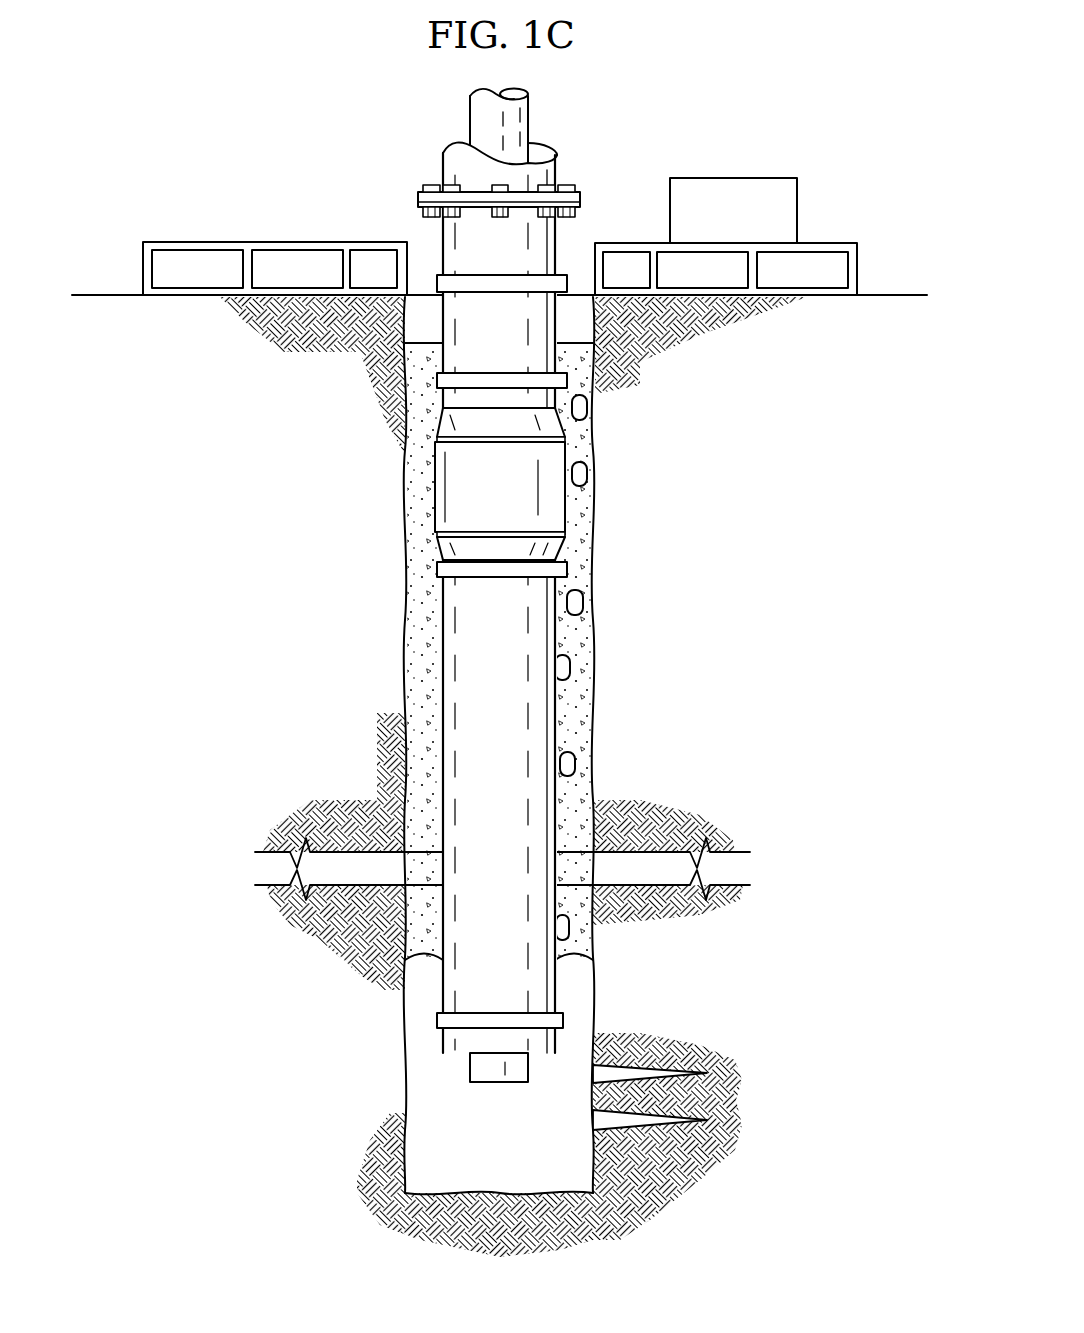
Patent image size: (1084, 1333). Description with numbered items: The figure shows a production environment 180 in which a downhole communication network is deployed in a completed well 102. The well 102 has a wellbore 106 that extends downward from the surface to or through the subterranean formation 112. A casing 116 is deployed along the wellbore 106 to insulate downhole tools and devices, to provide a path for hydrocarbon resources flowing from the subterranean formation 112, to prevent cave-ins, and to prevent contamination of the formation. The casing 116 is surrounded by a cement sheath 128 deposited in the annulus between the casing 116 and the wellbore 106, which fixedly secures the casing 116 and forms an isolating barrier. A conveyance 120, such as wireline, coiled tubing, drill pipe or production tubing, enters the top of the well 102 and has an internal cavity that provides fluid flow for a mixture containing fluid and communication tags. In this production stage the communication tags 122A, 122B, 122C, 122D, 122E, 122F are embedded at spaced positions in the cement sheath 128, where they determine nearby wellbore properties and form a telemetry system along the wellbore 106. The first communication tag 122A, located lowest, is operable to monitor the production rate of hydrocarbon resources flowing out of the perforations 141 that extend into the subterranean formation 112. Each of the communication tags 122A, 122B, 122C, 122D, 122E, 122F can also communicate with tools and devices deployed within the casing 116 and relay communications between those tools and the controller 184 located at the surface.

The production environment 180 is at (263, 62).
The well 102 is at (372, 178).
The conveyance 120 is at (470, 120).
The casing 116 is at (442, 235).
The controller 184 is at (733, 178).
The subterranean formation 112 is at (310, 418).
The cement sheath 128 is at (406, 617).
The first communication tag 122A is at (569, 928).
The communication tag 122B is at (576, 763).
The communication tag 122C is at (571, 668).
The communication tag 122D is at (584, 603).
The communication tag 122E is at (588, 475).
The communication tag 122F is at (588, 408).
The wellbore 106 is at (403, 1070).
The perforations 141 is at (631, 1066).